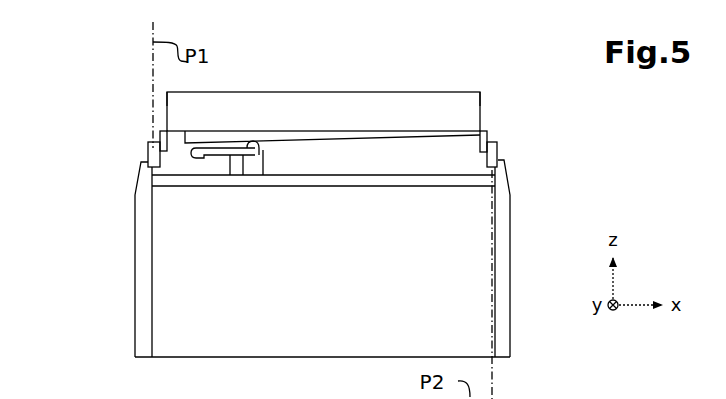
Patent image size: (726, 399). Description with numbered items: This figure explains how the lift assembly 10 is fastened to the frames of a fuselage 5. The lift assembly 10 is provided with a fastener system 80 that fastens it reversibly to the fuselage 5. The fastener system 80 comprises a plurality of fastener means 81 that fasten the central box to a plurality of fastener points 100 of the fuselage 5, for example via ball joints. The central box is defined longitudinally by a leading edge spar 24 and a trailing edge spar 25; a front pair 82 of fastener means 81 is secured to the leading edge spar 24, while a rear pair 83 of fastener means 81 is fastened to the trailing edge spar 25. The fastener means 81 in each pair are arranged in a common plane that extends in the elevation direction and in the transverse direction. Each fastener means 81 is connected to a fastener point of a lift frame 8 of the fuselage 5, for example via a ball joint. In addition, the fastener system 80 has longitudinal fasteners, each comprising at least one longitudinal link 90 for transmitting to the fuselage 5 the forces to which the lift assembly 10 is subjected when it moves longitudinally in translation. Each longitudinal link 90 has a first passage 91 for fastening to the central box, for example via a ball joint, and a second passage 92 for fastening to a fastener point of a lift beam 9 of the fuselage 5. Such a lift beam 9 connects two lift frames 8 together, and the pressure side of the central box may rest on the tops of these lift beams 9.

The fuselage 5 is at (544, 353).
The lift frame 8 is at (135, 330).
The lift beam 9 is at (398, 184).
The lift assembly 10 is at (432, 77).
The leading edge spar 24 is at (158, 104).
The trailing edge spar 25 is at (483, 108).
The fastener system 80 is at (548, 127).
The fastener means 81 is at (150, 143).
The front pair 82 is at (119, 153).
The rear pair 83 is at (521, 179).
The longitudinal link 90 is at (230, 156).
The first passage 91 is at (200, 150).
The second passage 92 is at (253, 155).
The fastener points 100 is at (139, 160).